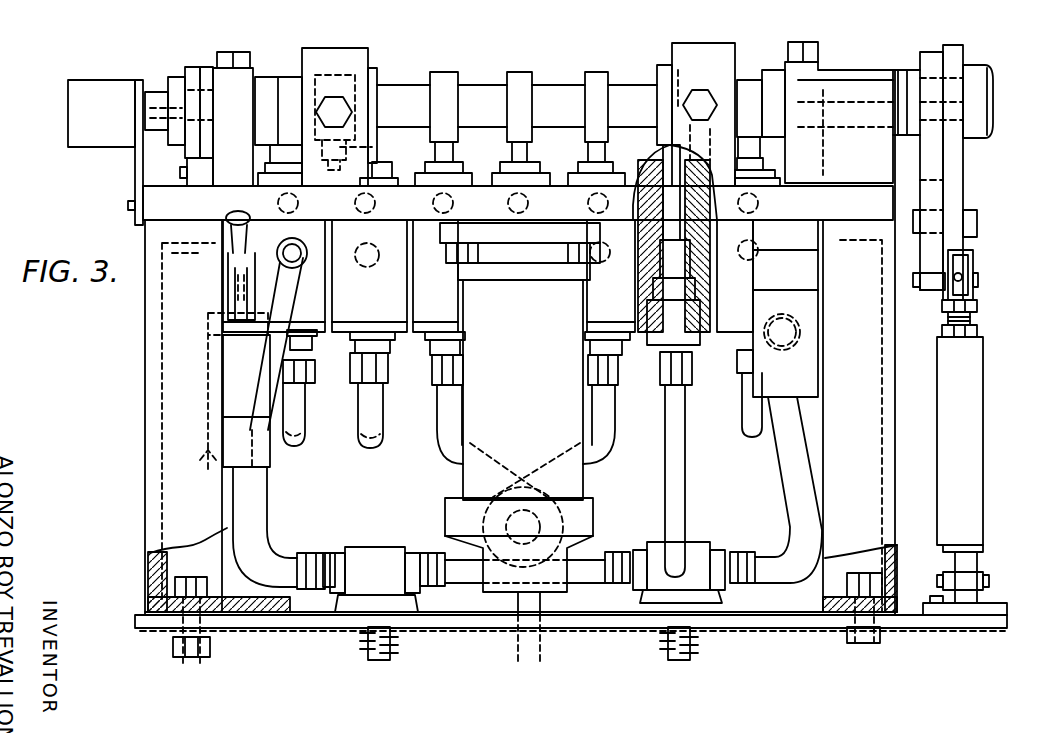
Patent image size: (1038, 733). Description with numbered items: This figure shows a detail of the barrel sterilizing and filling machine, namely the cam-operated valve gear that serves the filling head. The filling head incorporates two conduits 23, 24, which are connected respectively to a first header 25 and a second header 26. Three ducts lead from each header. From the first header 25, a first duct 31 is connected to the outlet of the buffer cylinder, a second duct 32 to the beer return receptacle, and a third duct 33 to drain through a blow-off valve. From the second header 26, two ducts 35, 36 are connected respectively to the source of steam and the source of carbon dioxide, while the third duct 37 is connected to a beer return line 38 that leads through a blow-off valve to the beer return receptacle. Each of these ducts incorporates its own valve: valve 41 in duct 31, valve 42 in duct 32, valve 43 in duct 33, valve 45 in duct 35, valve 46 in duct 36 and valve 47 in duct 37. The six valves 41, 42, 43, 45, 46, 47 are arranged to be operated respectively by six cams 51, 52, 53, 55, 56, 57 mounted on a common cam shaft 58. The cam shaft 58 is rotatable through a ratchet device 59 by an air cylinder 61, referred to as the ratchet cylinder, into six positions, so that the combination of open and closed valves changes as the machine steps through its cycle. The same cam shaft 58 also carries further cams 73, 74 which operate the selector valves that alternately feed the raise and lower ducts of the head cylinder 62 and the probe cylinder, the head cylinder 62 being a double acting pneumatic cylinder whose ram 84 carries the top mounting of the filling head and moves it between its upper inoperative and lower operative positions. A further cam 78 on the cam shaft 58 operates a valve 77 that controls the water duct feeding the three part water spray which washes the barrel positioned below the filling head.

The conduit 23 is at (665, 648).
The conduit 24 is at (392, 648).
The first header 25 is at (700, 543).
The second header 26 is at (375, 550).
The duct 31 is at (790, 472).
The duct 32 is at (670, 466).
The duct 33 is at (603, 443).
The duct 35 is at (258, 497).
The duct 36 is at (365, 408).
The duct 37 is at (440, 440).
The beer return line 38 is at (200, 468).
The valve 41 is at (740, 287).
The valve 42 is at (643, 293).
The valve 43 is at (592, 308).
The valve 45 is at (318, 318).
The valve 46 is at (392, 318).
The valve 47 is at (446, 309).
The cam 51 is at (749, 78).
The cam 52 is at (660, 67).
The cam 53 is at (591, 77).
The cam 55 is at (287, 78).
The cam 56 is at (378, 78).
The cam 57 is at (445, 78).
The cam shaft 58 is at (393, 115).
The ratchet device 59 is at (961, 188).
The air cylinder 61 is at (947, 393).
The head cylinder 62 is at (578, 477).
The cam 73 is at (368, 62).
The cam 74 is at (736, 63).
The valve 77 is at (533, 175).
The cam 78 is at (513, 77).
The ram 84 is at (540, 638).